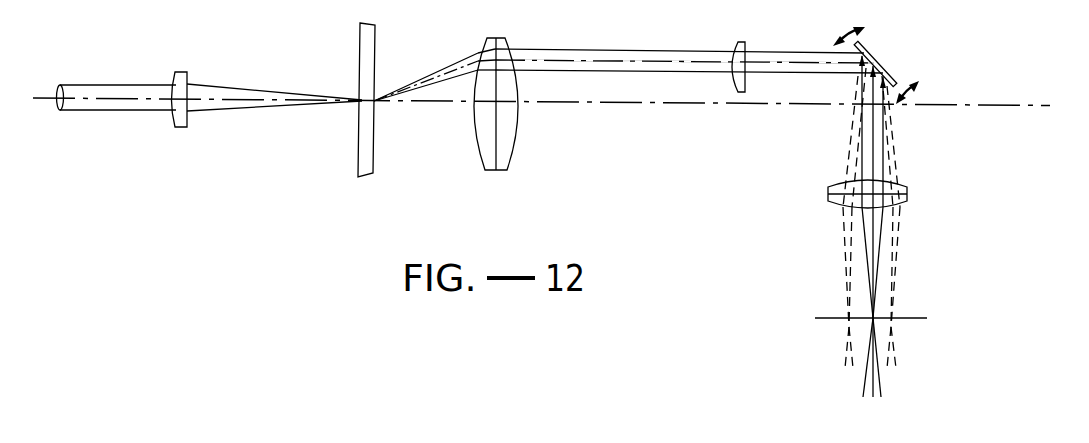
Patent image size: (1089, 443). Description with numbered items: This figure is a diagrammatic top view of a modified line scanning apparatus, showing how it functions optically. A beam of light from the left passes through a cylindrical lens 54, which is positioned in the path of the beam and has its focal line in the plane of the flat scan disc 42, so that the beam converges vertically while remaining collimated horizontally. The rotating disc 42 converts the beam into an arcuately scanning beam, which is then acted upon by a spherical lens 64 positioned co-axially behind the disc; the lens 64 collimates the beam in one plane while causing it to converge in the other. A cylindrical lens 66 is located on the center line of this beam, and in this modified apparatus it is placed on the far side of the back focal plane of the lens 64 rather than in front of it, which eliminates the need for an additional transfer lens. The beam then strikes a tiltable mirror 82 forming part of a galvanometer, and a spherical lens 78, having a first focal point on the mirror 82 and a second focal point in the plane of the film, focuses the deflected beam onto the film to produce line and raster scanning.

The cylindrical lens 54 is at (177, 72).
The scan disc 42 is at (358, 52).
The spherical lens 64 is at (510, 153).
The cylindrical lens 66 is at (740, 42).
The mirror 82 is at (878, 60).
The spherical lens 78 is at (905, 183).